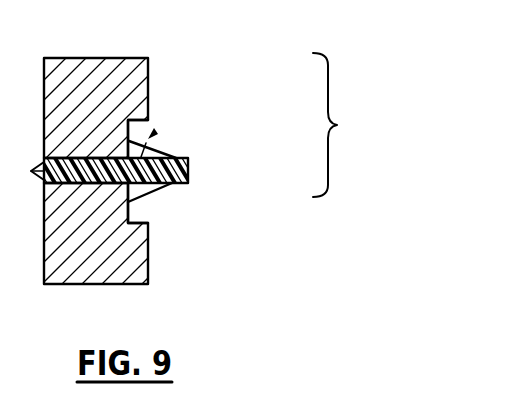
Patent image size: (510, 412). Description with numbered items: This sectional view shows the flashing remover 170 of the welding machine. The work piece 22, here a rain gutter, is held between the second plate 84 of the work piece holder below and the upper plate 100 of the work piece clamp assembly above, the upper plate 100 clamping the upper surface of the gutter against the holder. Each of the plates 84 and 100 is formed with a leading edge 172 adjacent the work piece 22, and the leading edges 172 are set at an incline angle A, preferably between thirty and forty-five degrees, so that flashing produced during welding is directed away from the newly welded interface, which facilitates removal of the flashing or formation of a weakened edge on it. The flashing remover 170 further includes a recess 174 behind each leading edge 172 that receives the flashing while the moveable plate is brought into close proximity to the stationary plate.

The upper plate 100 is at (137, 78).
The second plate 84 is at (130, 264).
The recess 174 is at (137, 131).
The work piece 22 is at (188, 170).
The leading edge 172 is at (155, 158).
The flashing remover 170 is at (352, 125).
The incline angle A is at (153, 134).